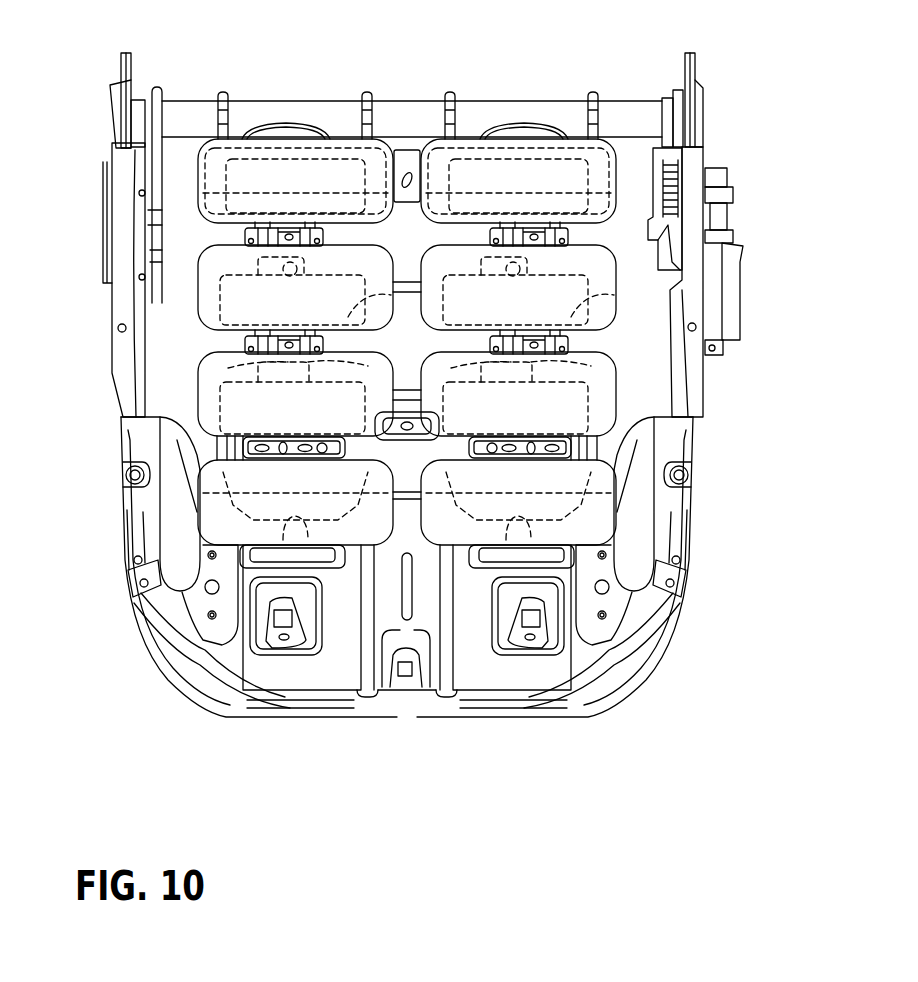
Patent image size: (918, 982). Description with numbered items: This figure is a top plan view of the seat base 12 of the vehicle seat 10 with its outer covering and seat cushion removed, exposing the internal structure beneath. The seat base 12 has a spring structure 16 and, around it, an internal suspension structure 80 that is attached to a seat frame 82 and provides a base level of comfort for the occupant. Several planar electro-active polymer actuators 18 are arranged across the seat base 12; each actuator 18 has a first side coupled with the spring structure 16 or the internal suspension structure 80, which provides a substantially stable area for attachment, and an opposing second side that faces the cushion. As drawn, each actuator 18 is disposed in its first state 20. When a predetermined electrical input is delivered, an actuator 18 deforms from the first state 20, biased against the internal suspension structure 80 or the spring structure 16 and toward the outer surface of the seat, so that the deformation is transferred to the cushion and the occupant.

The vehicle seat 10 is at (93, 83).
The seat base 12 is at (122, 302).
The spring structure 16 is at (600, 291).
The planar electro-active polymer actuator 18 is at (490, 172).
The first state 20 is at (624, 525).
The internal suspension structure 80 is at (568, 238).
The seat frame 82 is at (682, 375).